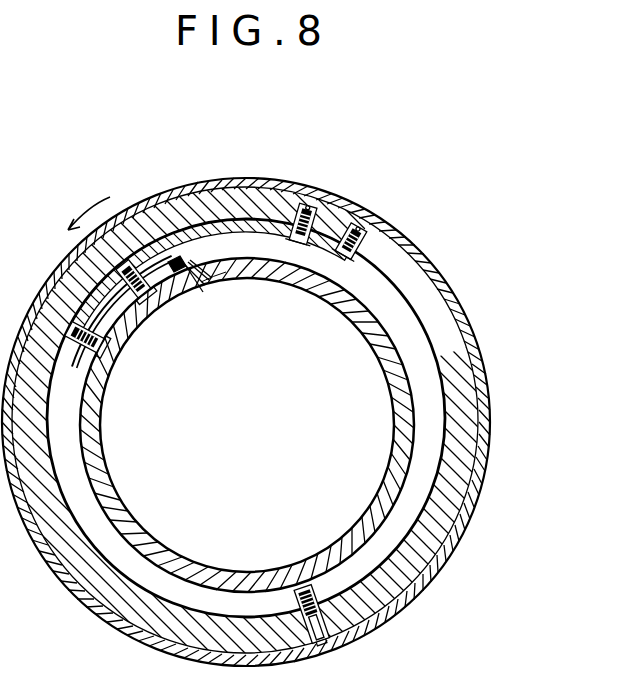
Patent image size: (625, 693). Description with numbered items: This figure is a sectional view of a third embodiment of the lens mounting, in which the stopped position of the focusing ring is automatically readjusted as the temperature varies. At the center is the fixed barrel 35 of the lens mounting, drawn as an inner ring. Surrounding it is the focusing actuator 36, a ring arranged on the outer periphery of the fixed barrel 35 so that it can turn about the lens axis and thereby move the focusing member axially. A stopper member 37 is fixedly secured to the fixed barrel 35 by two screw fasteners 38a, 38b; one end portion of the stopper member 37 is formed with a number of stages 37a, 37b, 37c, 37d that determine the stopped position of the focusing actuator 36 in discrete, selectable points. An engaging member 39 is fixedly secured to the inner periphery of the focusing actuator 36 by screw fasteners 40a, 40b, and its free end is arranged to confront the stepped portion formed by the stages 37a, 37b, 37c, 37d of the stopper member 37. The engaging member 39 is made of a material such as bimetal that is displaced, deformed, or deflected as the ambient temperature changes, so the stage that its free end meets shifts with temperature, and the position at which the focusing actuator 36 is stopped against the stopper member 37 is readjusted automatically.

The fixed barrel 35 is at (98, 461).
The focusing actuator 36 is at (465, 322).
The stopper member 37 is at (125, 322).
The stage 37a is at (205, 285).
The stage 37b is at (203, 292).
The stage 37c is at (209, 280).
The stage 37d is at (212, 278).
The screw fastener 38a is at (104, 362).
The screw fastener 38b is at (140, 303).
The engaging member 39 is at (213, 277).
The screw fastener 40a is at (310, 195).
The screw fastener 40b is at (352, 226).